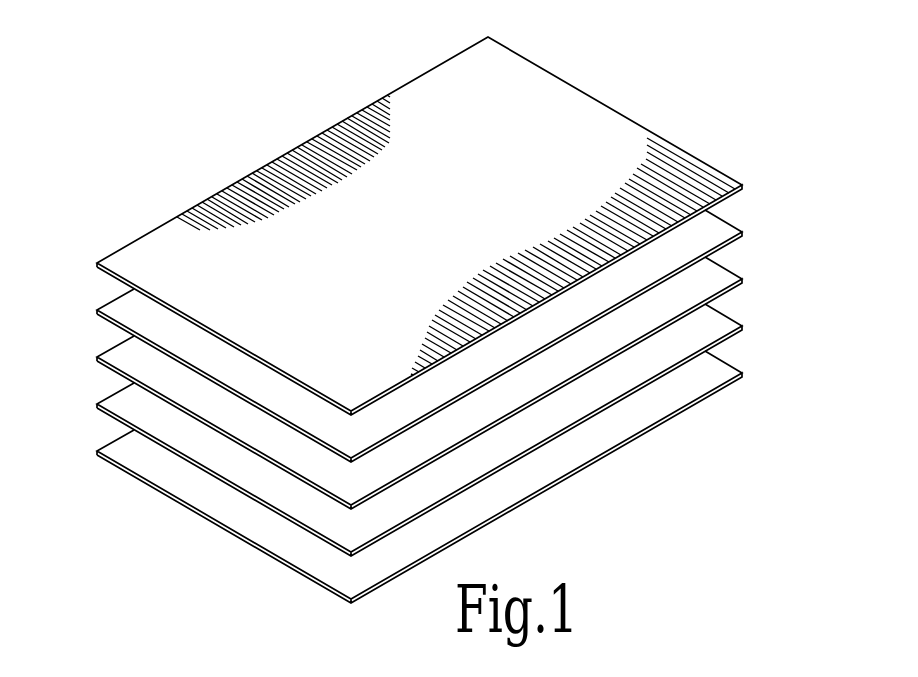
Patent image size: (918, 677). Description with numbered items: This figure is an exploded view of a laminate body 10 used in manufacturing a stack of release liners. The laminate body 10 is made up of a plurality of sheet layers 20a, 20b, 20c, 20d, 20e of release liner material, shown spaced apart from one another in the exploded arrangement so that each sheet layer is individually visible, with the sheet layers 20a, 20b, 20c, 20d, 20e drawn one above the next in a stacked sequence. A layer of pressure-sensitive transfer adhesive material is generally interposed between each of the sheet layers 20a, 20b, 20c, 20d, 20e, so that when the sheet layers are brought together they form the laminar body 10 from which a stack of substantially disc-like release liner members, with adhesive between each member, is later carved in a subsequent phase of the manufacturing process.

The laminate body 10 is at (93, 255).
The sheet layer 20a is at (742, 186).
The sheet layer 20b is at (742, 233).
The sheet layer 20c is at (742, 280).
The sheet layer 20d is at (742, 327).
The sheet layer 20e is at (742, 374).